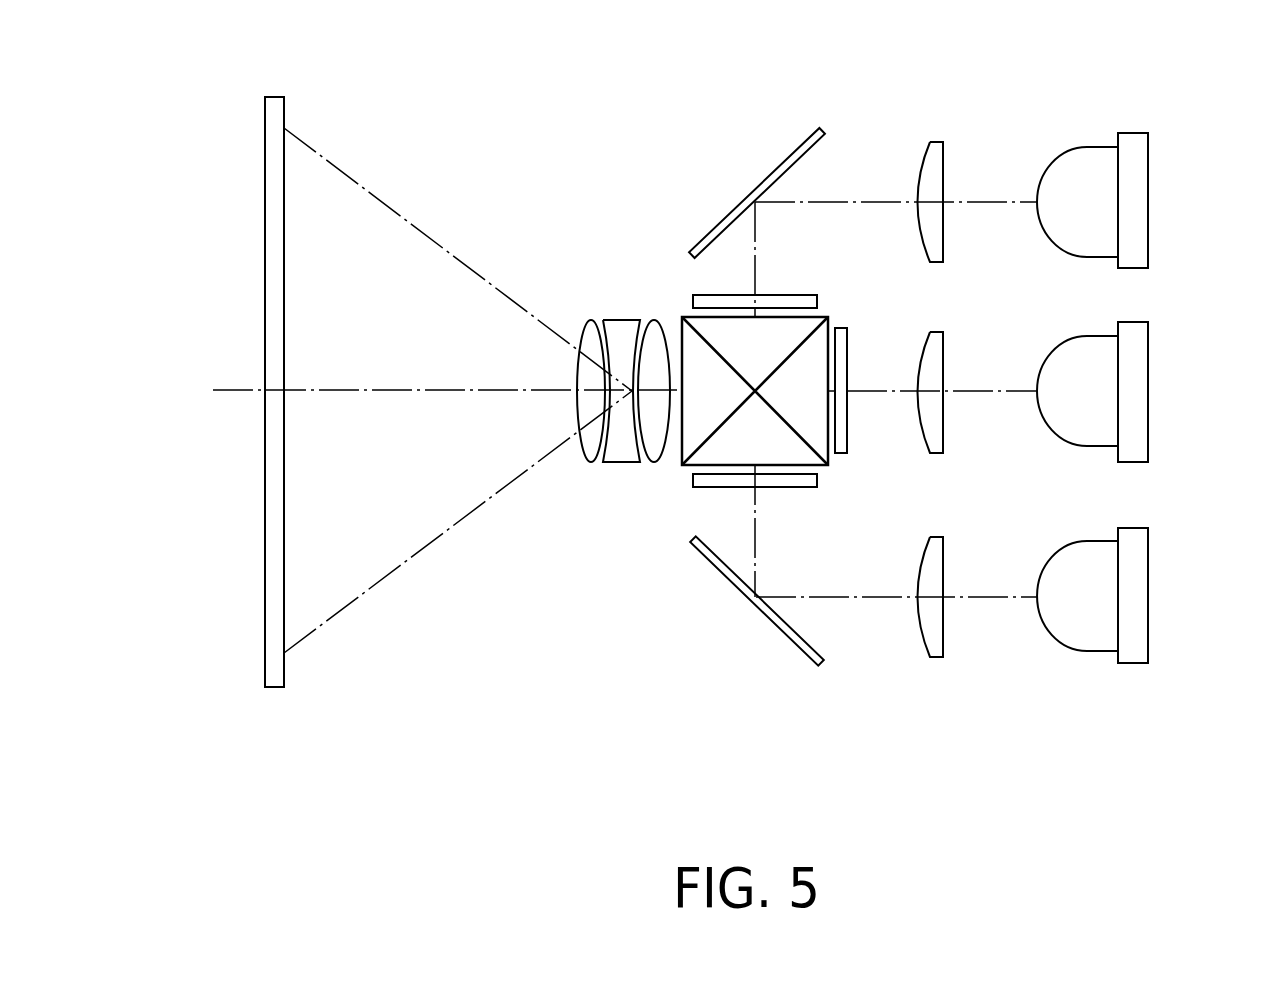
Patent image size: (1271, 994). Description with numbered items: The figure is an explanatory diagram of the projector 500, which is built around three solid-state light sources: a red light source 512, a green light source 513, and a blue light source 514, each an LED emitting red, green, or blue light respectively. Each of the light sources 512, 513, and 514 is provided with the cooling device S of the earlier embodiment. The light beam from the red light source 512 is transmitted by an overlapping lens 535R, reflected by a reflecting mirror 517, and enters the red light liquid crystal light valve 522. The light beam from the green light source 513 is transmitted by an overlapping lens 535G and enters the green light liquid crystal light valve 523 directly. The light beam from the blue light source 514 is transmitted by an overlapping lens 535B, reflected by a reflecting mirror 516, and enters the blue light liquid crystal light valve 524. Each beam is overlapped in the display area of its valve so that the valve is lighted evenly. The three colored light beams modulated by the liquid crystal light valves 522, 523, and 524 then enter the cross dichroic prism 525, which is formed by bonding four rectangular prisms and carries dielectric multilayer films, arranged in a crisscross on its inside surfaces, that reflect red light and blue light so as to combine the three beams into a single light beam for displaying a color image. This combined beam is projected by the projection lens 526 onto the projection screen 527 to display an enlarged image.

The projector 500 is at (488, 145).
The red light source 512 is at (1053, 140).
The green light source 513 is at (1053, 331).
The blue light source 514 is at (1053, 536).
The reflecting mirror 516 is at (772, 630).
The reflecting mirror 517 is at (792, 148).
The red light liquid crystal light valve 522 is at (783, 300).
The green light liquid crystal light valve 523 is at (842, 350).
The blue light liquid crystal light valve 524 is at (692, 481).
The cross dichroic prism 525 is at (693, 435).
The projection lens 526 is at (670, 322).
The projection screen 527 is at (275, 678).
The overlapping lens 535R is at (985, 137).
The overlapping lens 535G is at (985, 325).
The overlapping lens 535B is at (985, 533).
The cooling device S is at (1148, 167).